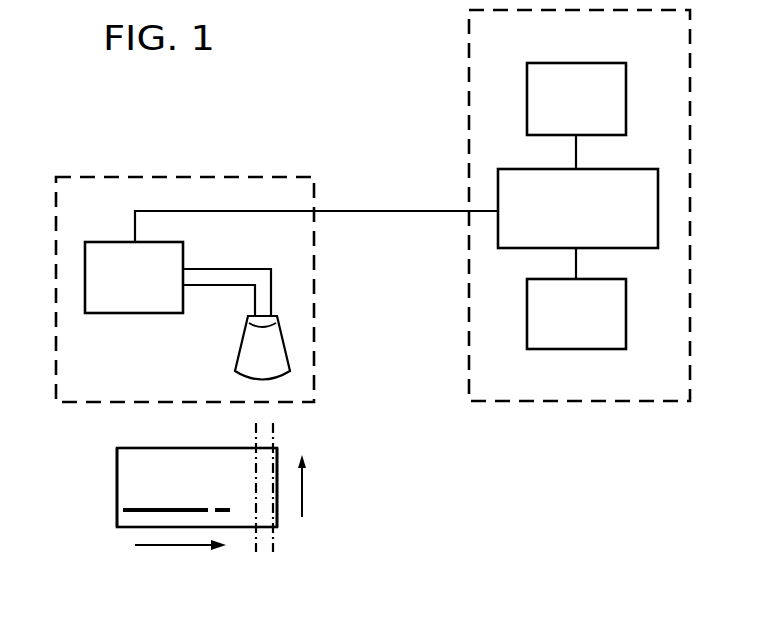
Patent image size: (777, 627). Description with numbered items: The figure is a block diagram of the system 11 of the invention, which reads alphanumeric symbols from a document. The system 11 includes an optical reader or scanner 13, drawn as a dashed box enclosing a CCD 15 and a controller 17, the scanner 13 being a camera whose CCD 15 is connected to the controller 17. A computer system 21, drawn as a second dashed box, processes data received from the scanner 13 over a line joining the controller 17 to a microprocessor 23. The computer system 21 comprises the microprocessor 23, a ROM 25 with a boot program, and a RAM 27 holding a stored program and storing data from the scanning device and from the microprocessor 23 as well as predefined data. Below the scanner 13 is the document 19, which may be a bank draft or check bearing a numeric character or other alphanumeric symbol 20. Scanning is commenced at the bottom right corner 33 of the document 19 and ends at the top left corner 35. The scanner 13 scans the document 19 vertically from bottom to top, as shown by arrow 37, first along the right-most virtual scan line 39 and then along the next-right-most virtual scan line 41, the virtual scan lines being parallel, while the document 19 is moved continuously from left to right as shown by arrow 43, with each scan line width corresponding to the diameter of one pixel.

The system 11 is at (420, 89).
The optical reader or scanner 13 is at (176, 177).
The CCD 15 is at (246, 341).
The controller 17 is at (140, 314).
The document 19 is at (152, 448).
The alphanumeric symbol 20 is at (148, 506).
The computer system 21 is at (607, 402).
The microprocessor 23 is at (627, 249).
The ROM 25 is at (561, 63).
The RAM 27 is at (568, 349).
The bottom right corner 33 is at (272, 535).
The top left corner 35 is at (117, 450).
The arrow 37 is at (302, 507).
The right-most virtual scan line 39 is at (275, 490).
The next-right-most virtual scan line 41 is at (256, 548).
The arrow 43 is at (172, 548).